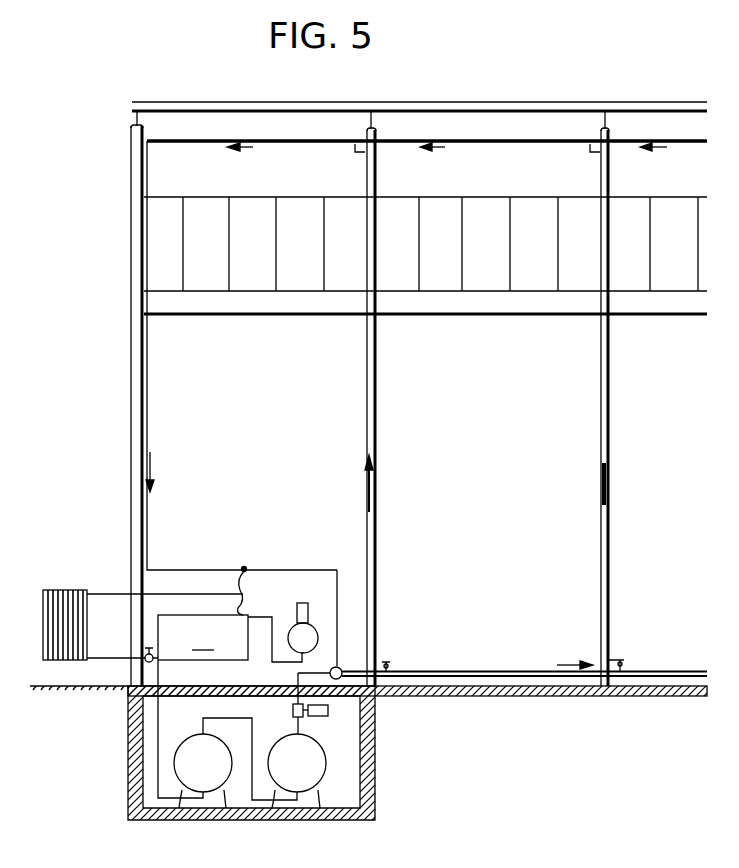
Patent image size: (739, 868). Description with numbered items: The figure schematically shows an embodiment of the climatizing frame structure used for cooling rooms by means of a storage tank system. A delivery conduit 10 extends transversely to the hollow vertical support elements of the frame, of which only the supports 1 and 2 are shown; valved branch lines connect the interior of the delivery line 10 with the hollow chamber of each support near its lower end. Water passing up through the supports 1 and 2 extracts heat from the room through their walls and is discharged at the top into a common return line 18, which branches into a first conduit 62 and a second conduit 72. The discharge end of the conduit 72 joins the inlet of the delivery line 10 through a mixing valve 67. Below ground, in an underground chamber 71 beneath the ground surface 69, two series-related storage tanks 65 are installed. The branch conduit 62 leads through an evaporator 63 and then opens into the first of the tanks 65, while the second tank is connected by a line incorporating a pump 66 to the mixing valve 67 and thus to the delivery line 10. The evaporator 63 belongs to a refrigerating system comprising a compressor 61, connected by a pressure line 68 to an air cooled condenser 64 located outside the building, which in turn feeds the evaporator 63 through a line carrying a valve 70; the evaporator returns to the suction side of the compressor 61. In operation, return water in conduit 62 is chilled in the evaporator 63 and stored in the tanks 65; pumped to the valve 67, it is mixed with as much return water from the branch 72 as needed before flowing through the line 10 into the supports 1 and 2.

The hollow vertical support element 1 is at (371, 410).
The hollow vertical support element 2 is at (610, 411).
The delivery conduit 10 is at (482, 672).
The common return line 18 is at (148, 406).
The compressor 61 is at (305, 603).
The first conduit 62 is at (244, 569).
The evaporator 63 is at (203, 637).
The air cooled condenser 64 is at (57, 590).
The storage tanks 65 is at (220, 767).
The pump 66 is at (328, 710).
The mixing valve 67 is at (341, 677).
The pressure line 68 is at (107, 594).
The ground surface 69 is at (109, 661).
The valve 70 is at (146, 654).
The underground room or chamber 71 is at (348, 788).
The second conduit 72 is at (340, 593).